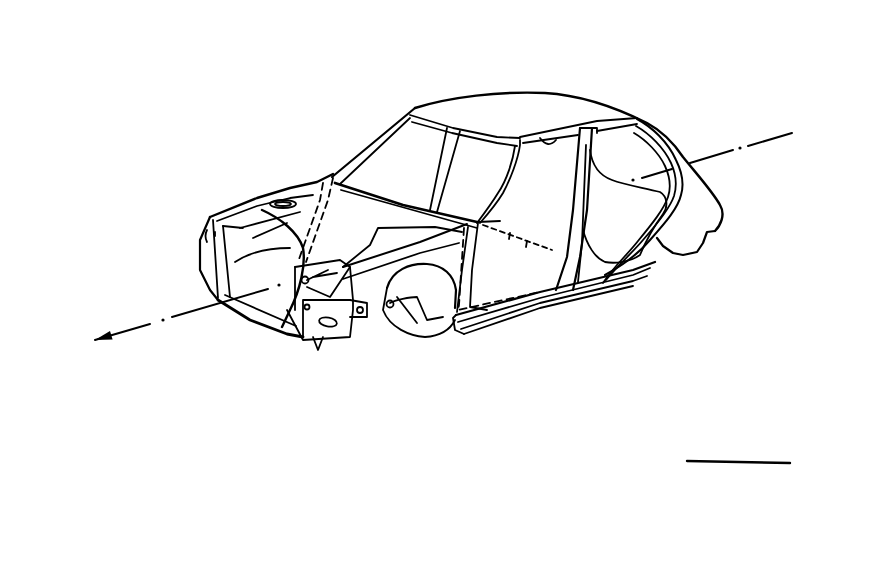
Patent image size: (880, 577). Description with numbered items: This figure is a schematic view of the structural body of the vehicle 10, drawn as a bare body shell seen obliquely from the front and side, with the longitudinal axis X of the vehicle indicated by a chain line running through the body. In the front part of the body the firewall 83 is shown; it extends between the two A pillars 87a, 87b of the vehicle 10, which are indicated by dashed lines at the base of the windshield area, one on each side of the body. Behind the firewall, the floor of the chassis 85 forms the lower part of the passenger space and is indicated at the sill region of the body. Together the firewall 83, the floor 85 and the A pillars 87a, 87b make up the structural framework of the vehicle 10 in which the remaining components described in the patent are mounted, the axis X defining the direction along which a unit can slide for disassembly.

The vehicle 10 is at (427, 82).
The firewall 83 is at (292, 282).
The floor of the chassis 85 is at (510, 288).
The A pillar 87a is at (472, 288).
The A pillar 87b is at (316, 193).